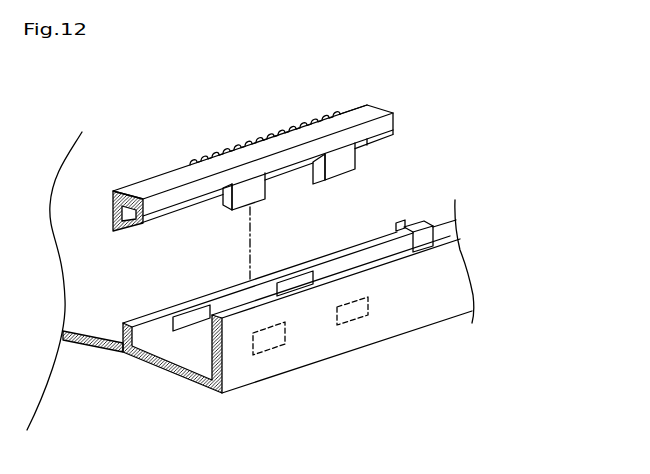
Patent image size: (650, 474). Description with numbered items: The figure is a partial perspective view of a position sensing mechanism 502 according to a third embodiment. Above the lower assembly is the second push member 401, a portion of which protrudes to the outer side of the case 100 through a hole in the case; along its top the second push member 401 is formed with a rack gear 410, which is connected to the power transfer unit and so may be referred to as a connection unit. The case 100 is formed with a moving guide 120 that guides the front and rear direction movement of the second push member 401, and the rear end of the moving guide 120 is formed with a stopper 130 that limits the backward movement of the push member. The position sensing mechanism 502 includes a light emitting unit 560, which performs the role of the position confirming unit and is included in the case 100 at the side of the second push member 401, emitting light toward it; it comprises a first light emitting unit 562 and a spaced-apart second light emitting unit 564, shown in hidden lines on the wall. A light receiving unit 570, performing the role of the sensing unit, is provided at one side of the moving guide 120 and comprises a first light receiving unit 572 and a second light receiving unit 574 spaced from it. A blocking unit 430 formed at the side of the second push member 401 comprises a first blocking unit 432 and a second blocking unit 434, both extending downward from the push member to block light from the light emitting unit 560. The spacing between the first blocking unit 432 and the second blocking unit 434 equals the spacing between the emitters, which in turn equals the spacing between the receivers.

The case 100 is at (87, 347).
The moving guide 120 is at (152, 337).
The stopper 130 is at (455, 227).
The second push member 401 is at (338, 117).
The rack gear 410 is at (284, 133).
The blocking unit 430 is at (316, 143).
The first blocking unit 432 is at (257, 198).
The second blocking unit 434 is at (343, 167).
The position sensing mechanism 502 is at (367, 275).
The light emitting unit 560 is at (321, 296).
The first light emitting unit 562 is at (285, 332).
The second light emitting unit 564 is at (368, 306).
The light receiving unit 570 is at (369, 289).
The first light receiving unit 572 is at (302, 282).
The second light receiving unit 574 is at (193, 316).